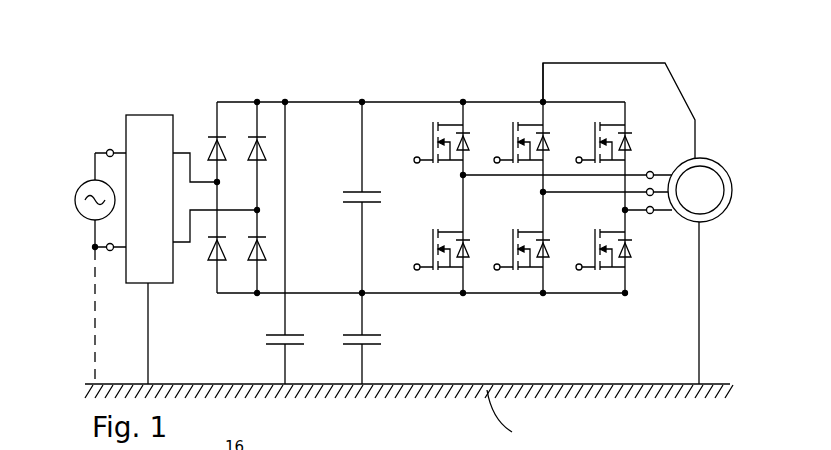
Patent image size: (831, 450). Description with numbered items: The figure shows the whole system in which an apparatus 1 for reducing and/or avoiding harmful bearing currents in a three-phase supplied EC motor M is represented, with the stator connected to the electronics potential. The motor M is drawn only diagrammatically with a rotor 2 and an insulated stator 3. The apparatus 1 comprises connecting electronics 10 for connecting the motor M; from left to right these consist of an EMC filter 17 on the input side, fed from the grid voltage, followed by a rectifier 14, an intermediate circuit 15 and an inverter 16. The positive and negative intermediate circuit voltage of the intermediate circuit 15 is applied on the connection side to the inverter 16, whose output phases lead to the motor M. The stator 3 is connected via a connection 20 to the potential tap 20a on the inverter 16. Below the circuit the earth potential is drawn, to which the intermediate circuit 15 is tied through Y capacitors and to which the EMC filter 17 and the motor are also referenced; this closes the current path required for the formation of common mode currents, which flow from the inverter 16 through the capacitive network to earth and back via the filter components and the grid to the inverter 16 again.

The apparatus 1 is at (727, 65).
The rotor 2 is at (717, 218).
The stator 3 is at (698, 163).
The connecting electronics 10 is at (188, 82).
The rectifier 14 is at (258, 118).
The intermediate circuit 15 is at (365, 125).
The inverter 16 is at (513, 100).
The EMC filter 17 is at (140, 122).
The connection 20 is at (648, 63).
The potential tap 20a is at (548, 100).